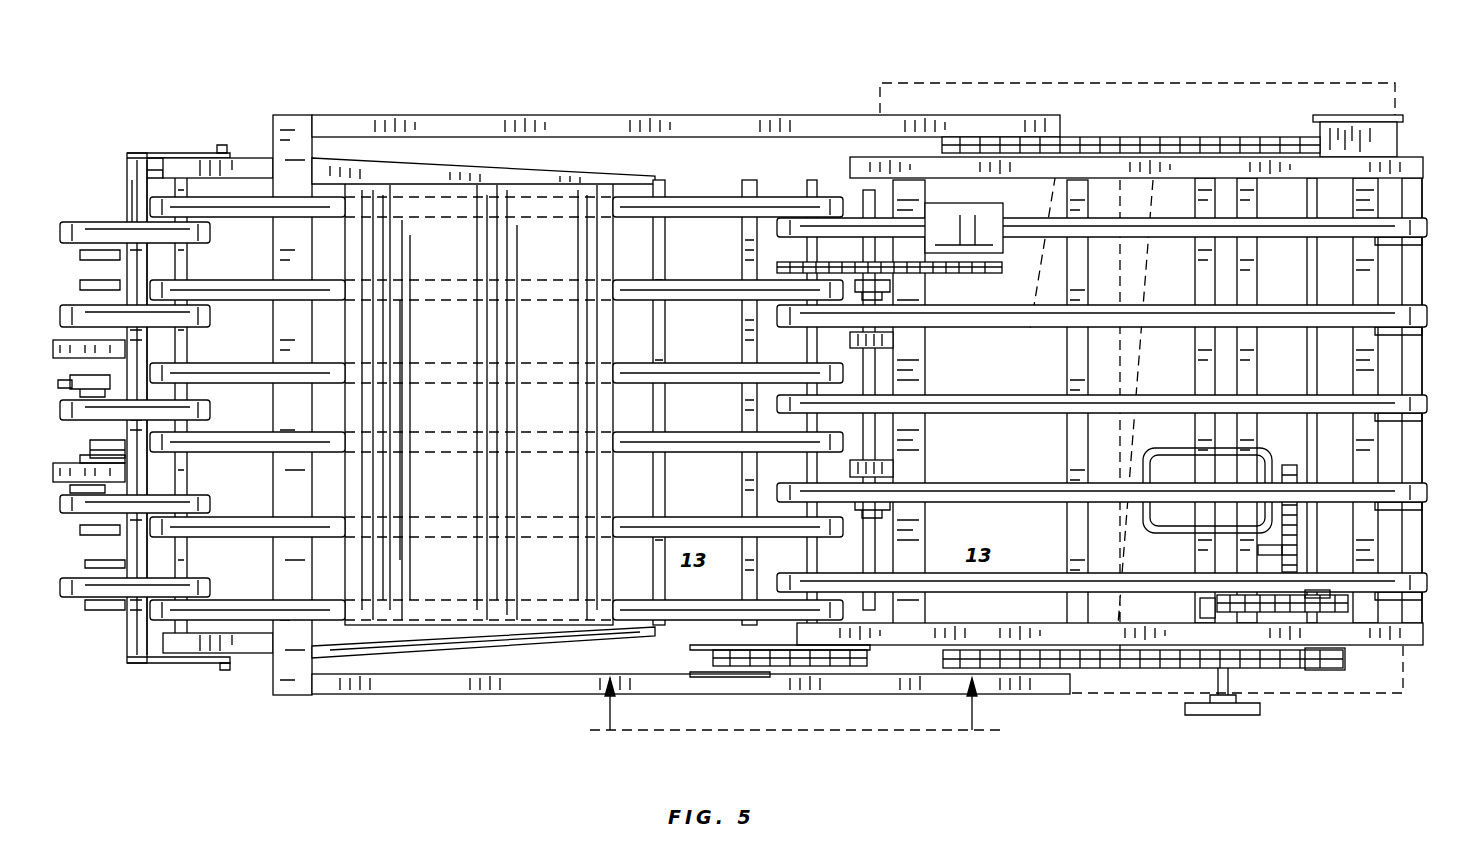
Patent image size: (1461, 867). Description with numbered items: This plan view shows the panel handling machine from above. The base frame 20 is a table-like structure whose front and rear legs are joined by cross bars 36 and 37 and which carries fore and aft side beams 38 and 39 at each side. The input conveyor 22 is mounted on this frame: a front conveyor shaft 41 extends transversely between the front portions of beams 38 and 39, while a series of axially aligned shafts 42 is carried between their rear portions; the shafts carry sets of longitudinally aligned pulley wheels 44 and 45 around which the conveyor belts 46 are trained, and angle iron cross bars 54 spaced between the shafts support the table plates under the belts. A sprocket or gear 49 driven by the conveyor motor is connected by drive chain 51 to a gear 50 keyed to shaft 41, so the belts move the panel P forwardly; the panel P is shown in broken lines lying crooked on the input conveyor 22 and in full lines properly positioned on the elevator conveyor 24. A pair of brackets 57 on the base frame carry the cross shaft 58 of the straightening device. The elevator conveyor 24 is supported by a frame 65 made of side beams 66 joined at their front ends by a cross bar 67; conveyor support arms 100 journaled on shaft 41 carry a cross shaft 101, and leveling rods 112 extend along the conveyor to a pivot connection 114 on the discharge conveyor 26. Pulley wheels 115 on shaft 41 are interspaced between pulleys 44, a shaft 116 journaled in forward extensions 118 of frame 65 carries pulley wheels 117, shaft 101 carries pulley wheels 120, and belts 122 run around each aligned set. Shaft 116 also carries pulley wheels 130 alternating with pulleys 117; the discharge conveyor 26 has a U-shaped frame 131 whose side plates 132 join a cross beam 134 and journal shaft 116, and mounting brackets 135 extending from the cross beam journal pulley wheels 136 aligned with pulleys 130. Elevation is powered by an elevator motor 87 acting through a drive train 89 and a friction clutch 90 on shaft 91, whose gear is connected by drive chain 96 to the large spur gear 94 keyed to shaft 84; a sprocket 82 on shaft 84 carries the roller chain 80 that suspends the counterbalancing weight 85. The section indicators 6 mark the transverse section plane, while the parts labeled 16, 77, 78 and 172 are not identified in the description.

The section line 6- 6 is at (795, 723).
The conveyor roller 16 is at (1030, 490).
The base frame 20 is at (1365, 112).
The input conveyor 22 is at (1422, 300).
The elevator conveyor 24 is at (340, 172).
The discharge conveyor 26 is at (190, 135).
The cross bar 36 is at (920, 428).
The cross bar 37 is at (1320, 372).
The side beam 38 is at (1163, 660).
The side beam 39 is at (1185, 165).
The front conveyor shaft 41 is at (790, 244).
The shafts 42 is at (1395, 355).
The pulley wheels 44 is at (800, 228).
The pulley wheels 45 is at (1420, 225).
The conveyor belts 46 is at (1278, 312).
The sprocket or gear 49 is at (990, 275).
The sprocket or gear 50 is at (830, 292).
The drive chain 51 is at (925, 275).
The angle iron cross bars 54 is at (1080, 375).
The brackets 57 is at (893, 345).
The cross shaft 58 is at (895, 374).
The frame 65 is at (600, 113).
The side beams 66 is at (470, 114).
The cross bar 67 is at (302, 697).
The drive block 77 is at (1057, 175).
The direction arrow 78 is at (1060, 190).
The roller or pitch chain 80 is at (1152, 137).
The toothed gear or sprocket 82 is at (1328, 670).
The shaft 84 is at (1320, 343).
The weight 85 is at (1340, 245).
The elevator motor 87 is at (1168, 450).
The drive train 89 is at (1295, 520).
The friction clutch 90 is at (1240, 560).
The shaft 91 is at (1200, 607).
The spur gear 94 is at (1340, 600).
The drive chain 96 is at (1250, 600).
The conveyor support arms 100 is at (688, 670).
The cross shaft 101 is at (668, 393).
The leveling rods 112 is at (450, 658).
The pivot connection 114 is at (218, 663).
The pulley wheels 115 is at (790, 430).
The shaft 116 is at (190, 350).
The pulley wheels 117 is at (205, 220).
The forward extensions 118 is at (255, 170).
The pulley wheels 120 is at (665, 385).
The belts 122 is at (727, 468).
The pulley wheels 130 is at (200, 302).
The U-shaped frame 131 is at (130, 165).
The side plates 132 is at (160, 152).
The cross beam 134 is at (125, 185).
The pulley wheel mounting brackets 135 is at (150, 290).
The pulley wheel 136 is at (128, 248).
The drum line 172 is at (290, 525).
The panel P is at (1135, 342).